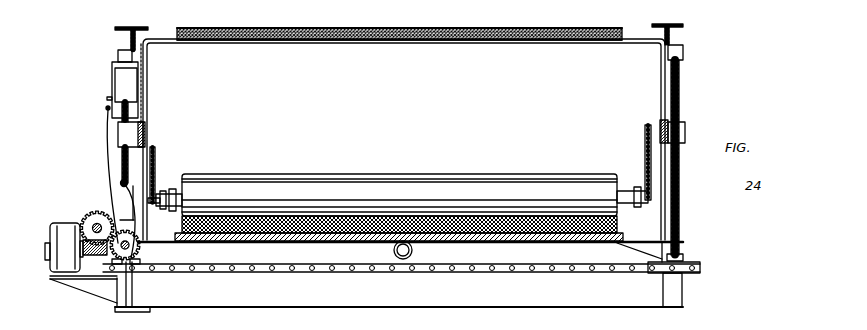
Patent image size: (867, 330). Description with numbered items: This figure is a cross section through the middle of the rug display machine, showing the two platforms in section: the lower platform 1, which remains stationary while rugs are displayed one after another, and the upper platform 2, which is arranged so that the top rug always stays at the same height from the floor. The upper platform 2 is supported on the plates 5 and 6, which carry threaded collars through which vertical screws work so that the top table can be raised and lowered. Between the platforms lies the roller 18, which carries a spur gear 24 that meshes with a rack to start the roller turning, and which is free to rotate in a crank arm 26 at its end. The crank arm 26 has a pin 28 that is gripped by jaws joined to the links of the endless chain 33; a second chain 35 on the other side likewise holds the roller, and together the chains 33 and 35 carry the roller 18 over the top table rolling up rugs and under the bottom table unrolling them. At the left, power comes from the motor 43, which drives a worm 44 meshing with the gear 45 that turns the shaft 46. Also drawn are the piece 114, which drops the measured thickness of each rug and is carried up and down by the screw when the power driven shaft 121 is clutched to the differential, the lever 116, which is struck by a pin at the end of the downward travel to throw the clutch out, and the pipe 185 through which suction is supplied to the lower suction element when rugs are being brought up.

The lower platform 1 is at (280, 242).
The upper platform 2 is at (330, 41).
The plate 5 is at (662, 123).
The plate 6 is at (143, 125).
The roller 18 is at (625, 208).
The spur gear 24 is at (173, 190).
The crank arm 26 is at (646, 163).
The pin 28 is at (134, 202).
The chain 33 is at (148, 28).
The chain 35 is at (652, 24).
The motor 43 is at (50, 229).
The worm 44 is at (97, 254).
The gear 45 is at (89, 214).
The shaft 46 is at (98, 225).
The piece 114 is at (118, 80).
The lever 116 is at (107, 109).
The power driven shaft 121 is at (131, 246).
The pipe 185 is at (414, 251).